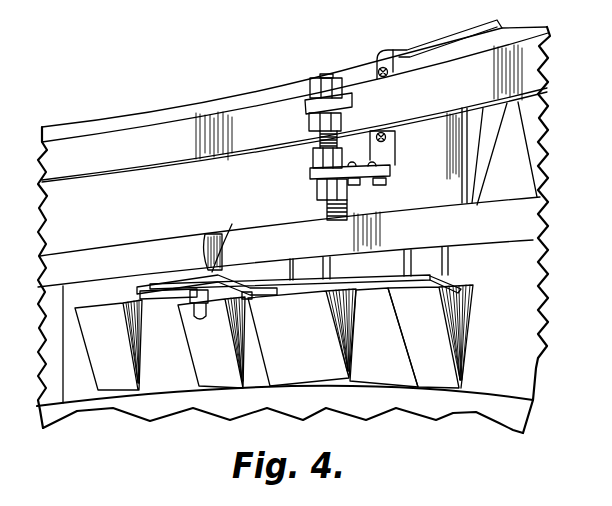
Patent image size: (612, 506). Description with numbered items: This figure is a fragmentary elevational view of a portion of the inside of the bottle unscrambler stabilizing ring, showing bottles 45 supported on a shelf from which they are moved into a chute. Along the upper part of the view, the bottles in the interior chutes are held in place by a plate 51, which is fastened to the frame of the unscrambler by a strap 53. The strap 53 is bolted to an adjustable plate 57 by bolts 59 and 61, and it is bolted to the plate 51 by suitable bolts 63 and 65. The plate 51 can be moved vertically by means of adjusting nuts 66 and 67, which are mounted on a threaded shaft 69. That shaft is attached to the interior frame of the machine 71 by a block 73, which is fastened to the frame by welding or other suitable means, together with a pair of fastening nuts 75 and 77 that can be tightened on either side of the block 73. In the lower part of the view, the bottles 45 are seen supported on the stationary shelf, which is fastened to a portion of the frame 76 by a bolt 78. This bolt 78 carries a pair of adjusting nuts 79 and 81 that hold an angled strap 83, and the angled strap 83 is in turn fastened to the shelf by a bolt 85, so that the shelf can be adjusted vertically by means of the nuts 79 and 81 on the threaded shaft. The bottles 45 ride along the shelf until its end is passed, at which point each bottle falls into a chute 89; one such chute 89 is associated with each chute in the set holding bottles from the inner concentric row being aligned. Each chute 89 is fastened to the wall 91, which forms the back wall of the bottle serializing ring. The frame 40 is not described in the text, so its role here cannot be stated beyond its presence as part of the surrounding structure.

The frame 40 is at (452, 288).
The bottles 45 is at (229, 246).
The plate 51 is at (138, 216).
The strap 53 is at (403, 46).
The adjustable plate 57 is at (391, 171).
The bolt 59 is at (388, 181).
The bolt 61 is at (345, 189).
The bolt 63 is at (381, 66).
The bolt 65 is at (396, 134).
The adjusting nut 66 is at (317, 191).
The adjusting nut 67 is at (313, 162).
The threaded shaft 69 is at (327, 74).
The interior frame of the machine 71 is at (416, 104).
The block 73 is at (309, 120).
The fastening nut 75 is at (307, 99).
The frame 76 is at (98, 277).
The fastening nut 77 is at (319, 138).
The bolt 78 is at (194, 307).
The adjusting nut 79 is at (211, 236).
The adjusting nut 81 is at (142, 300).
The angled strap 83 is at (250, 306).
The bolt 85 is at (247, 300).
The chute 89 is at (117, 341).
The wall 91 is at (386, 344).